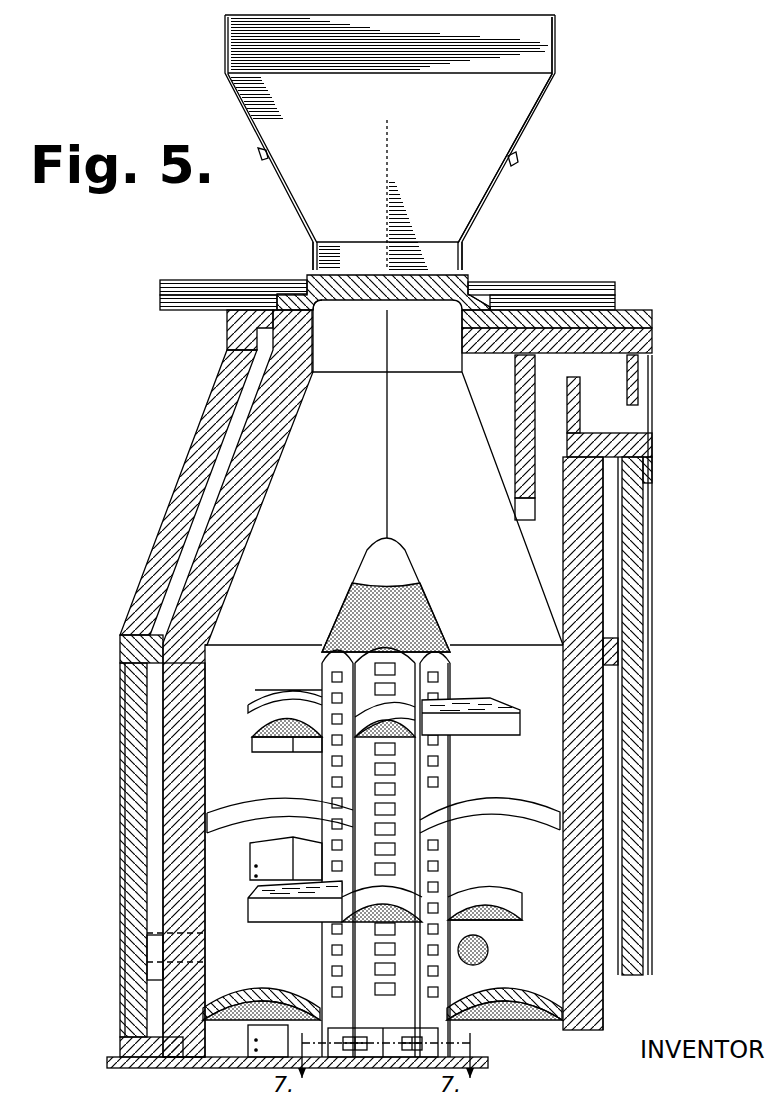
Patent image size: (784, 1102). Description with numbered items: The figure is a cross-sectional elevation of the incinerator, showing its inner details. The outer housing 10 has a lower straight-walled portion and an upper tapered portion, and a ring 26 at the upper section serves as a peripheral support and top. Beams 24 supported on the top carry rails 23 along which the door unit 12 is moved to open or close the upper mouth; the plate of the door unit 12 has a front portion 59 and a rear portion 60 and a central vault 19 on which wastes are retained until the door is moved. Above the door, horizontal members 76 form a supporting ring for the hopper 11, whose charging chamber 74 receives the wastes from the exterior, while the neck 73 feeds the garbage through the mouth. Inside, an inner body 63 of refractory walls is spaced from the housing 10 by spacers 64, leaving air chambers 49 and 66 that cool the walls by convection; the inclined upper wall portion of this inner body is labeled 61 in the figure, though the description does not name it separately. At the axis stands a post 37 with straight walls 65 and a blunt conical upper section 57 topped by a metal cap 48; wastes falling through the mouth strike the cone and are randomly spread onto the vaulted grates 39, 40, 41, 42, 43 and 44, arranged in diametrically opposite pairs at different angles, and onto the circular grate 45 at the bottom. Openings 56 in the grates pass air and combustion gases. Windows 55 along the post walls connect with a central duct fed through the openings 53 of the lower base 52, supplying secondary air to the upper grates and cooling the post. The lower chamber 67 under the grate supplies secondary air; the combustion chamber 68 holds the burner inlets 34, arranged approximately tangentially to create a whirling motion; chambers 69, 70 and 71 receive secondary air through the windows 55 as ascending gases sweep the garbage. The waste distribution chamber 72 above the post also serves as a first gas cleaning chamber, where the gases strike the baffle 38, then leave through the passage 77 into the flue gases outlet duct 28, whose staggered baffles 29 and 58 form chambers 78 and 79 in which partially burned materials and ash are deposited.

The housing 10 is at (126, 718).
The hopper 11 is at (562, 50).
The door unit 12 is at (418, 268).
The vault 19 is at (445, 283).
The rails 23 is at (214, 280).
The beams 24 is at (196, 300).
The ring 26 is at (640, 312).
The flue gases outlet duct 28 is at (610, 447).
The baffle 29 is at (640, 375).
The inlets for the burners 34 is at (481, 942).
The post 37 is at (454, 671).
The baffle 38 is at (517, 397).
The vaulted grate 39 is at (257, 714).
The vaulted grate 40 is at (505, 728).
The vaulted grate 41 is at (514, 812).
The vaulted grate 42 is at (229, 815).
The vaulted grate 43 is at (503, 898).
The vaulted grate 44 is at (270, 912).
The circular grate 45 is at (278, 984).
The metal cap 48 is at (388, 557).
The air chamber 49 is at (250, 387).
The lower base 52 is at (372, 1036).
The openings 53 is at (402, 1036).
The windows 55 is at (386, 772).
The openings of grate 56 is at (221, 996).
The blunt conical upper section 57 is at (410, 600).
The baffle 58 is at (580, 392).
The front portion 59 is at (495, 288).
The rear portion 60 is at (324, 306).
The inner wall 61 is at (243, 553).
The inner body 63 is at (186, 680).
The spacers 64 is at (152, 647).
The straight walls 65 is at (432, 655).
The air chamber 66 is at (155, 770).
The lower chamber 67 is at (513, 1044).
The combustion chamber 68 is at (533, 971).
The chamber 69 is at (501, 866).
The chamber 70 is at (533, 790).
The chamber 71 is at (545, 692).
The waste distribution chamber 72 is at (350, 471).
The neck 73 is at (416, 352).
The charging chamber 74 is at (500, 100).
The horizontal members 76 is at (515, 165).
The passage 77 is at (546, 426).
The chamber 78 is at (612, 417).
The chamber 79 is at (653, 388).